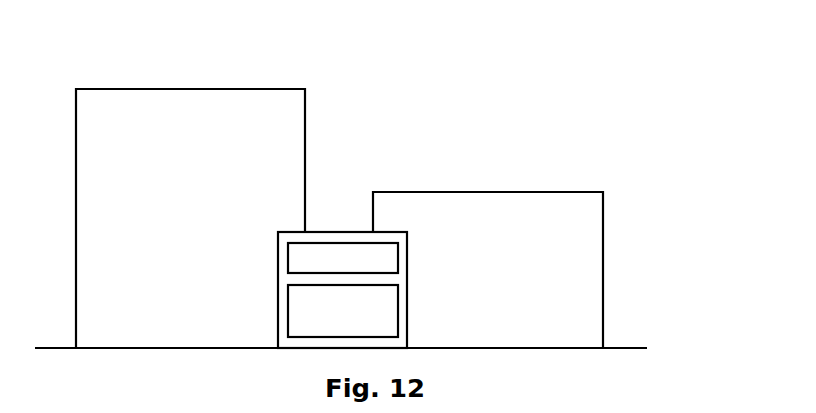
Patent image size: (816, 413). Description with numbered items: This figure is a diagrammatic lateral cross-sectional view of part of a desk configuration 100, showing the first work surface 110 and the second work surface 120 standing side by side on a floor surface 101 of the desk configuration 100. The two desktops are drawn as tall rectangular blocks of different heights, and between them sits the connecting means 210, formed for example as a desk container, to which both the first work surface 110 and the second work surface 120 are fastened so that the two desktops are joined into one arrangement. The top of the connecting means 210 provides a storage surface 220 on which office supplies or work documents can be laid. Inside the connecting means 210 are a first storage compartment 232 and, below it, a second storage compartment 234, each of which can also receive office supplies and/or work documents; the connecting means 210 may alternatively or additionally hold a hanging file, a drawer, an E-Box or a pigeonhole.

The desk configuration 100 is at (490, 127).
The floor surface 101 is at (634, 336).
The first work surface 110 is at (551, 180).
The second work surface 120 is at (106, 79).
The connecting means 210 is at (272, 263).
The storage surface 220 is at (338, 230).
The first storage compartment 232 is at (322, 269).
The second storage compartment 234 is at (322, 321).